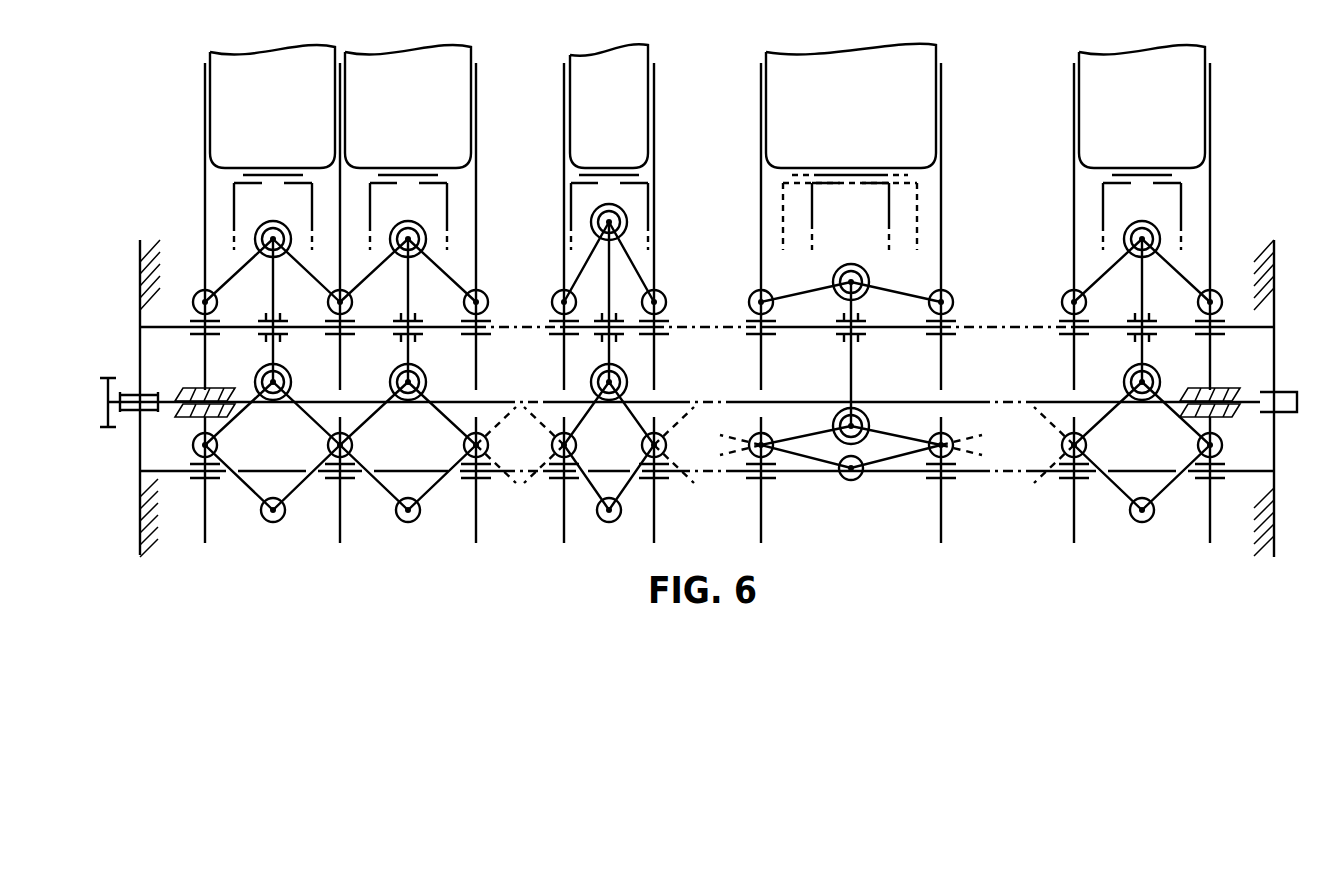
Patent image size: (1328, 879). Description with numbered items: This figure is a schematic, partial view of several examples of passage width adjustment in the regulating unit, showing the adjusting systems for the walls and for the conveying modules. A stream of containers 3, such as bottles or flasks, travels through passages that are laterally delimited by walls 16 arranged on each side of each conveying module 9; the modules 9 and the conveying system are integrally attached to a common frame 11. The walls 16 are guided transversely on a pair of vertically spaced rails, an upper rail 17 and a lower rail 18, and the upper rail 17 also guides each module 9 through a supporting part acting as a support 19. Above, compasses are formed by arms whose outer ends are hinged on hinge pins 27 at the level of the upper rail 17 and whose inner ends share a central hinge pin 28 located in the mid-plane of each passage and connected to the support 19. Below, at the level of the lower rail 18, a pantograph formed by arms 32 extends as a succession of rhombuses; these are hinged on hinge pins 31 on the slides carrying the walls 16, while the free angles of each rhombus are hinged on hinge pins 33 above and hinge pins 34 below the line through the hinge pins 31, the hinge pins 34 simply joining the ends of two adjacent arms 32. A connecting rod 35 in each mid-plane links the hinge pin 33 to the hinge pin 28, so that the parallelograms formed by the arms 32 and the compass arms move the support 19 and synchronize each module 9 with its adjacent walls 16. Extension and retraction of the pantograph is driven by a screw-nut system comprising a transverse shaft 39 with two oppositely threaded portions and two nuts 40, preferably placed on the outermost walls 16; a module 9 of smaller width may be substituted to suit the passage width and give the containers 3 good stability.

The container 3 is at (1150, 117).
The conveying module 9 is at (228, 178).
The frame 11 is at (1262, 553).
The wall 16 is at (205, 77).
The upper rail 17 is at (1258, 332).
The lower rail 18 is at (165, 474).
The support 19 is at (263, 320).
The hinge pin 27 is at (202, 300).
The hinge pin 28 is at (270, 237).
The hinge pin 31 is at (202, 447).
The arm 32 is at (325, 459).
The hinge pin 33 is at (1130, 375).
The hinge pin 34 is at (270, 522).
The connecting rod 35 is at (408, 277).
The shaft 39 is at (106, 393).
The nut 40 is at (195, 390).